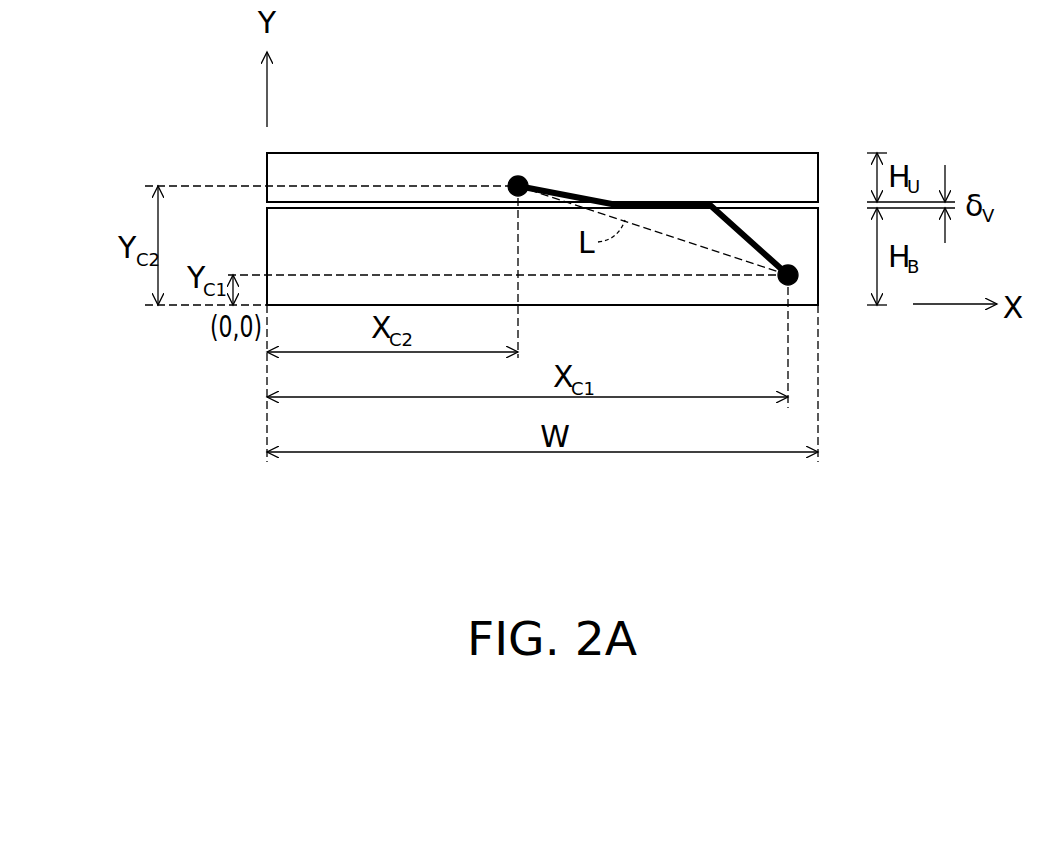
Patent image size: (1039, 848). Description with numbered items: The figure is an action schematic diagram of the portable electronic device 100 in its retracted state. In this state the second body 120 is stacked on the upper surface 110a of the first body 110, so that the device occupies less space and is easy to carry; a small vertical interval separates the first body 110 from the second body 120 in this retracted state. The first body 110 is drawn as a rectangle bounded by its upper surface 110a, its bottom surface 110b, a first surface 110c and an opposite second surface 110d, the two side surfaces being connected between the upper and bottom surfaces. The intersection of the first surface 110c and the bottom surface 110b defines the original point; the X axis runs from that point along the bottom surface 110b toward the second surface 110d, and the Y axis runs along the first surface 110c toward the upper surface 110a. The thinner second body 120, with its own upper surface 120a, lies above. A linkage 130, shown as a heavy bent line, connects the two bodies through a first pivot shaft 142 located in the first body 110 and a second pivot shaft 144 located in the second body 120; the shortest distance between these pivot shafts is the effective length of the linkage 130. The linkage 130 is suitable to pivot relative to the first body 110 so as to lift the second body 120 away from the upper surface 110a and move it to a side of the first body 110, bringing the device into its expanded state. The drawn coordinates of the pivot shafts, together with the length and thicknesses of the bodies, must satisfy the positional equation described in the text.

The portable electronic device 100 is at (920, 522).
The first body 110 is at (749, 290).
The upper surface 110a is at (747, 206).
The bottom surface 110b is at (677, 306).
The first surface 110c is at (266, 237).
The second surface 110d is at (819, 256).
The second body 120 is at (783, 172).
The upper surface 120a is at (627, 152).
The linkage 130 is at (668, 207).
The first pivot shaft 142 is at (789, 265).
The second pivot shaft 144 is at (518, 176).